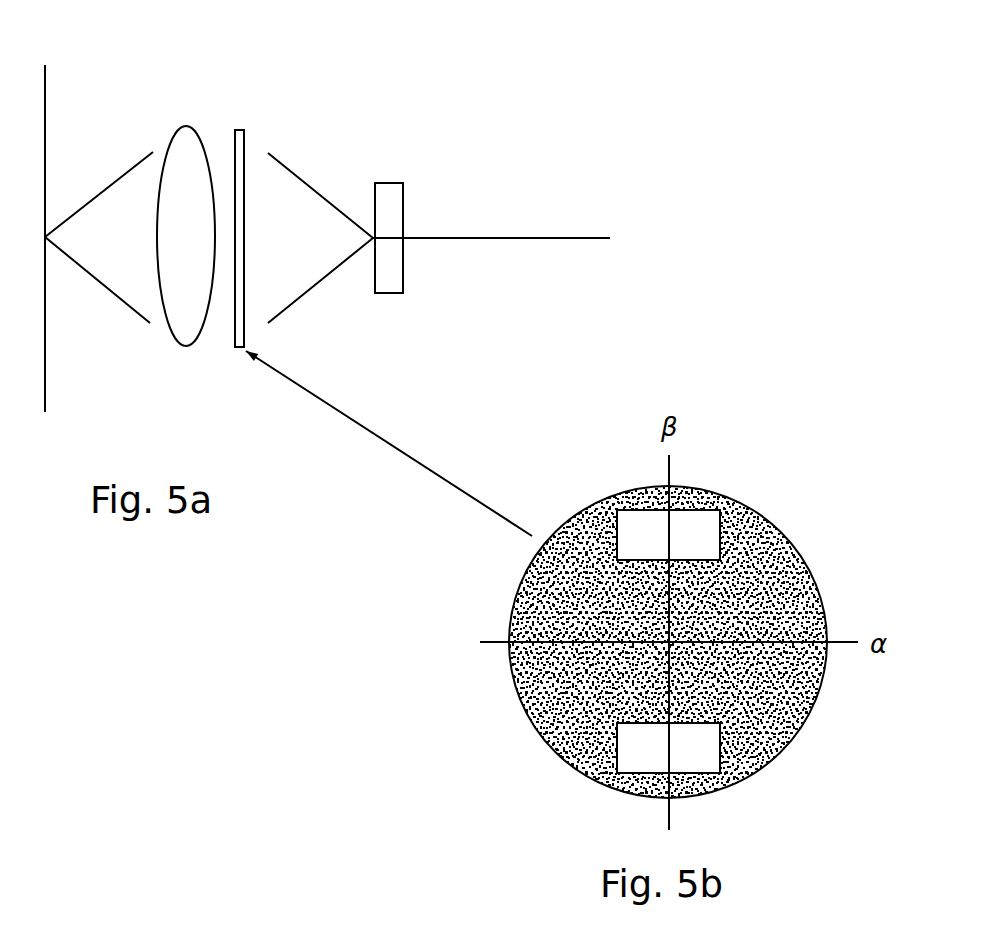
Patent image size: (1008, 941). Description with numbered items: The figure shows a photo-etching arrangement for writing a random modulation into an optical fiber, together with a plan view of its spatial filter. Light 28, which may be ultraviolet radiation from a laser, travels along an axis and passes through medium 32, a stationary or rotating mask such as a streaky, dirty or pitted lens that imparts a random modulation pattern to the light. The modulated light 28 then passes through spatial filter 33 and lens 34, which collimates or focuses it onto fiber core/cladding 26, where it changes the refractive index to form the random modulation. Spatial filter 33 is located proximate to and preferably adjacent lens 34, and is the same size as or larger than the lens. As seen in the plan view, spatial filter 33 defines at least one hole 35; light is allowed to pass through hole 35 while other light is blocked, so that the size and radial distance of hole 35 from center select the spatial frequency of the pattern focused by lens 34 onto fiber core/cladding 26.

In FIG. 5a, the fiber core/cladding 26 is at (46, 90).
In FIG. 5a, the lens 34 is at (187, 138).
In FIG. 5a, the spatial filter 33 is at (240, 130).
In FIG. 5b, the spatial filter 33 is at (825, 562).
In FIG. 5a, the medium 32 is at (387, 192).
In FIG. 5a, the light 28 is at (427, 235).
In FIG. 5b, the hole 35 is at (698, 520).